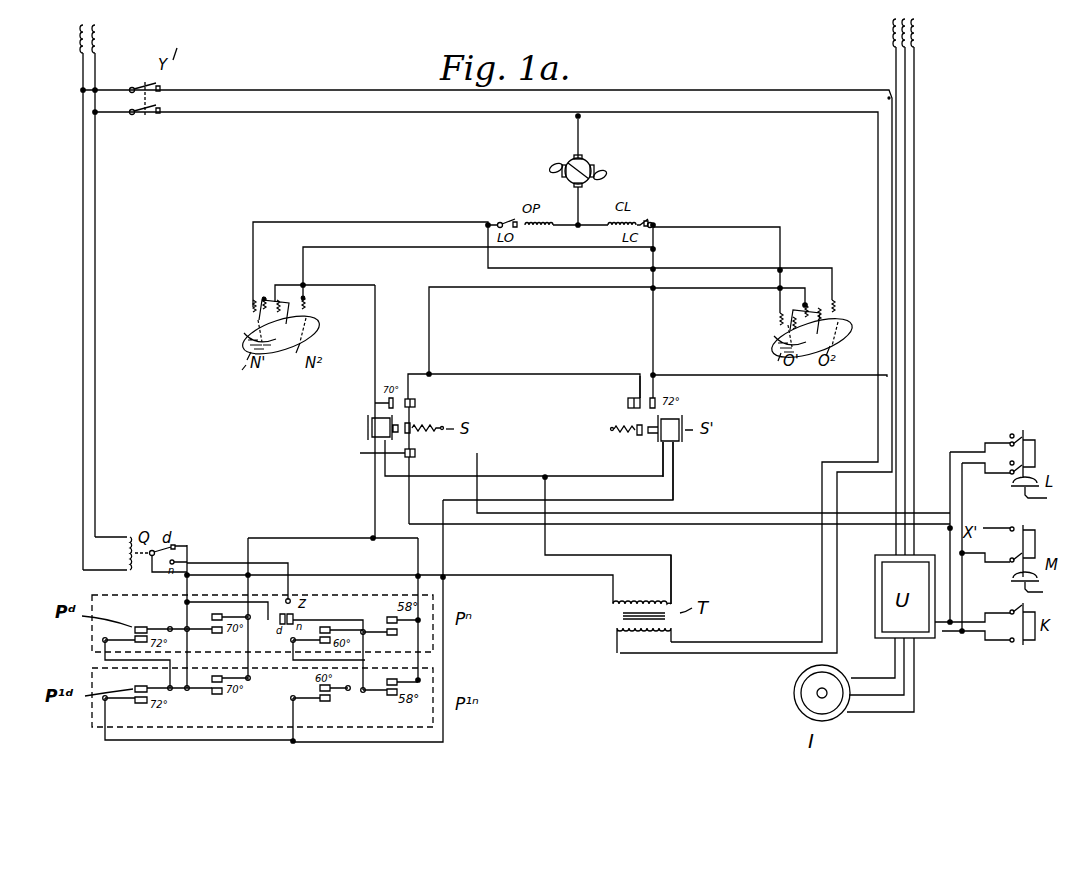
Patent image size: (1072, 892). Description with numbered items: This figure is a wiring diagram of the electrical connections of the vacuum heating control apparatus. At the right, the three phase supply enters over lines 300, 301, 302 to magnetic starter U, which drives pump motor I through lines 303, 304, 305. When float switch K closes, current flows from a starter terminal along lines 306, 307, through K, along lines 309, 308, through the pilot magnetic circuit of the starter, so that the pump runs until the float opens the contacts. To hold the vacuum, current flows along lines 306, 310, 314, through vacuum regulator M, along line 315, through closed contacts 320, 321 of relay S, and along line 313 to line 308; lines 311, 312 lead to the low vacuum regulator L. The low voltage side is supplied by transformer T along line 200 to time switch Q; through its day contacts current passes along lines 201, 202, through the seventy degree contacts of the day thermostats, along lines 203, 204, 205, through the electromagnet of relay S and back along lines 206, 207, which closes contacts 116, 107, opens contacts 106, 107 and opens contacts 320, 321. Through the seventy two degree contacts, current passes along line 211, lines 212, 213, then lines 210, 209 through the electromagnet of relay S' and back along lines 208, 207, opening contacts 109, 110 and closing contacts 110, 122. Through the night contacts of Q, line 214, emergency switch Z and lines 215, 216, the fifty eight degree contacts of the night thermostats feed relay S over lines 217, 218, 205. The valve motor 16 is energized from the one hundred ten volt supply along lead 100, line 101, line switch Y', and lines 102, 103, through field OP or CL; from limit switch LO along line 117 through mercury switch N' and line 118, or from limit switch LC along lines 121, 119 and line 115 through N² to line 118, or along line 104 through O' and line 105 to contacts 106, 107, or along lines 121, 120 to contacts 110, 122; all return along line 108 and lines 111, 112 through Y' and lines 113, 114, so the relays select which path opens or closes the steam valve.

The electric motor 16 is at (582, 184).
The 110 v. supply lead 100 is at (98, 50).
The line 101 is at (124, 118).
The line 102 is at (380, 120).
The line 103 is at (576, 133).
The line 104 is at (748, 225).
The line 105 is at (728, 288).
The contact of relay S 106 is at (420, 406).
The contact of relay S 107 is at (418, 401).
The line 108 is at (507, 374).
The contact of relay S' 109 is at (628, 405).
The contact of relay S' 110 is at (638, 396).
The line 111 is at (792, 378).
The line 112 is at (355, 90).
The line 113 is at (118, 90).
The line 114 is at (82, 60).
The conductor 115 is at (580, 281).
The contact of relay S 116 is at (385, 410).
The line 117 is at (331, 222).
The line 118 is at (322, 288).
The line 119 is at (425, 248).
The line 120 is at (653, 342).
The line 121 is at (660, 243).
The contact of relay S' 122 is at (665, 410).
The line 200 is at (595, 580).
The line 201 is at (187, 583).
The line 202 is at (187, 608).
The line 203 is at (250, 652).
The line 204 is at (312, 530).
The line 205 is at (372, 500).
The line 206 is at (463, 477).
The line 207 is at (607, 552).
The line 208 is at (568, 480).
The line 209 is at (533, 500).
The line 210 is at (250, 743).
The line 211 is at (105, 654).
The conductor 212 is at (185, 658).
The conductor 213 is at (246, 598).
The line 214 is at (218, 563).
The line 215 is at (336, 620).
The line 216 is at (346, 654).
The line 217 is at (420, 661).
The line 218 is at (418, 560).
The supply line 300 is at (914, 58).
The supply line 301 is at (905, 87).
The supply line 302 is at (896, 115).
The line 303 is at (914, 700).
The line 304 is at (904, 665).
The line 305 is at (873, 658).
The line 306 is at (966, 658).
The line 307 is at (980, 644).
The line 308 is at (946, 648).
The line 309 is at (975, 645).
The line 310 is at (962, 596).
The conductor 311 is at (962, 493).
The conductor 312 is at (950, 485).
The line 313 is at (962, 581).
The line 314 is at (978, 559).
The line 315 is at (756, 512).
The contact of relay S 320 is at (419, 452).
The contact of relay S 321 is at (367, 455).